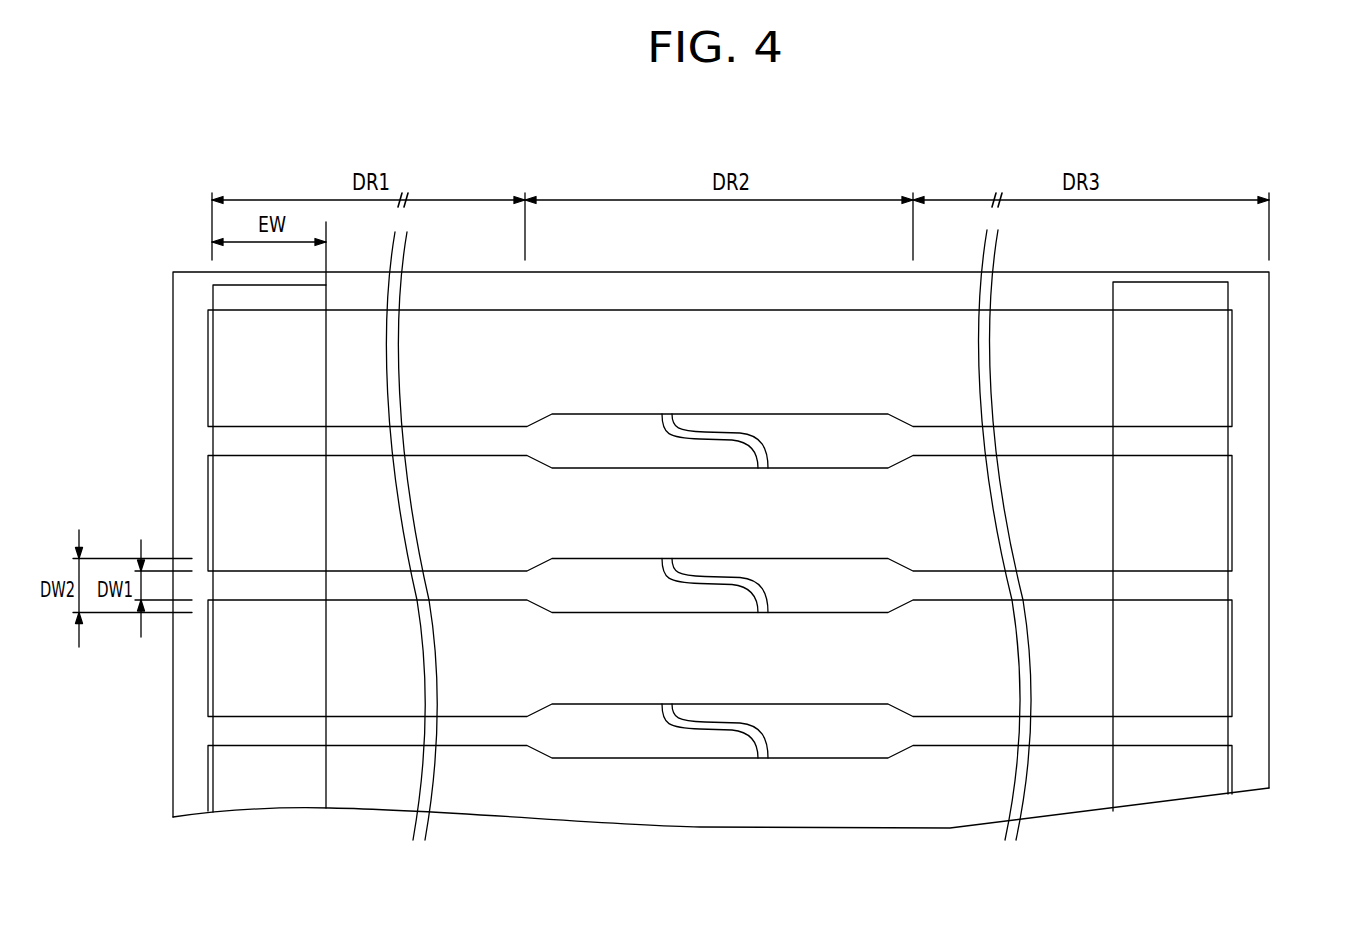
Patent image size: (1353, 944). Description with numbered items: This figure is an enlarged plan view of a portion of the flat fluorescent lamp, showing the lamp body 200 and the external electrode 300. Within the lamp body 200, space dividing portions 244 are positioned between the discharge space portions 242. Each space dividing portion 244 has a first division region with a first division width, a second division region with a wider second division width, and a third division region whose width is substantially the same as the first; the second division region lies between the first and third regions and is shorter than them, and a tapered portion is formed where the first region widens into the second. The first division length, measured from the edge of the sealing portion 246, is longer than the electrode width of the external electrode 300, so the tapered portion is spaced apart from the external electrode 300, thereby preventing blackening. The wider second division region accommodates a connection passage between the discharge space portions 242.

The lamp body 200 is at (703, 725).
The discharge space portions 242 is at (1077, 513).
The space dividing portions 244 is at (1077, 583).
The sealing portion 246 is at (1245, 659).
The external electrode 300 is at (222, 298).